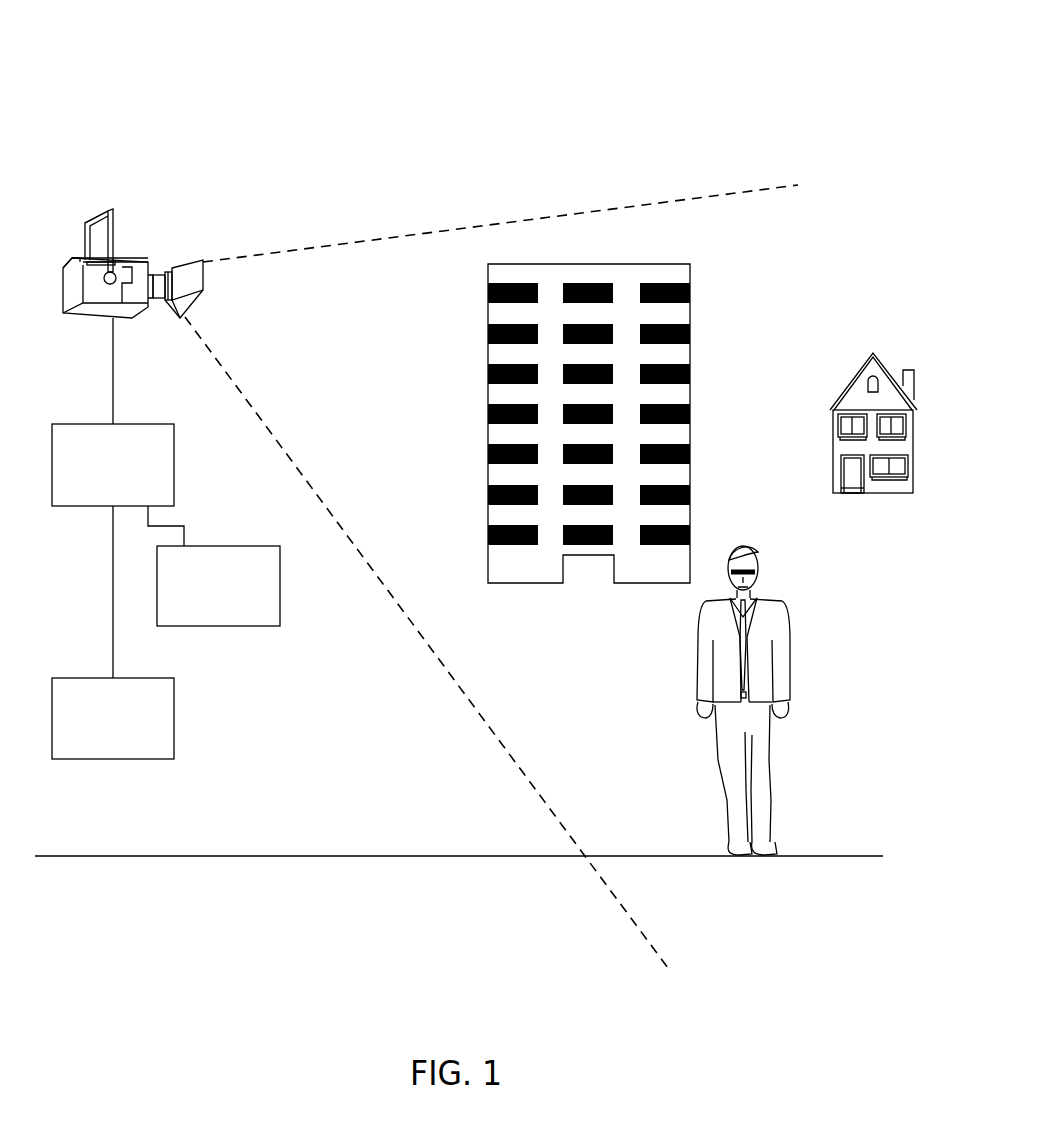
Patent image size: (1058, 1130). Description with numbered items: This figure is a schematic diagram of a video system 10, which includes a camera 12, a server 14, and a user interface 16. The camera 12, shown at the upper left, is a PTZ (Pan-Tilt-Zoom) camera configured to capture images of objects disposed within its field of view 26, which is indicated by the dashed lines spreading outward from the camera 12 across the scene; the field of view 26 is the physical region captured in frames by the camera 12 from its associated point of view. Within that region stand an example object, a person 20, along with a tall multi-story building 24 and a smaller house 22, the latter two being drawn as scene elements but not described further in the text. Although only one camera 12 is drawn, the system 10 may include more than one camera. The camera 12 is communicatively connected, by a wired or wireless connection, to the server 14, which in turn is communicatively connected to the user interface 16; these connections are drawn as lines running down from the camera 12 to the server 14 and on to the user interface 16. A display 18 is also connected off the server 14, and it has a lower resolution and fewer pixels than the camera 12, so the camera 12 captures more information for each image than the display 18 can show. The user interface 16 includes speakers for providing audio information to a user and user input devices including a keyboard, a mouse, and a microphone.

The video system 10 is at (796, 66).
The camera 12 is at (145, 262).
The server 14 is at (174, 463).
The user interface 16 is at (174, 716).
The display 18 is at (218, 546).
The person 20 is at (790, 645).
The house 22 is at (863, 372).
The building 24 is at (488, 357).
The field of view 26 is at (428, 643).